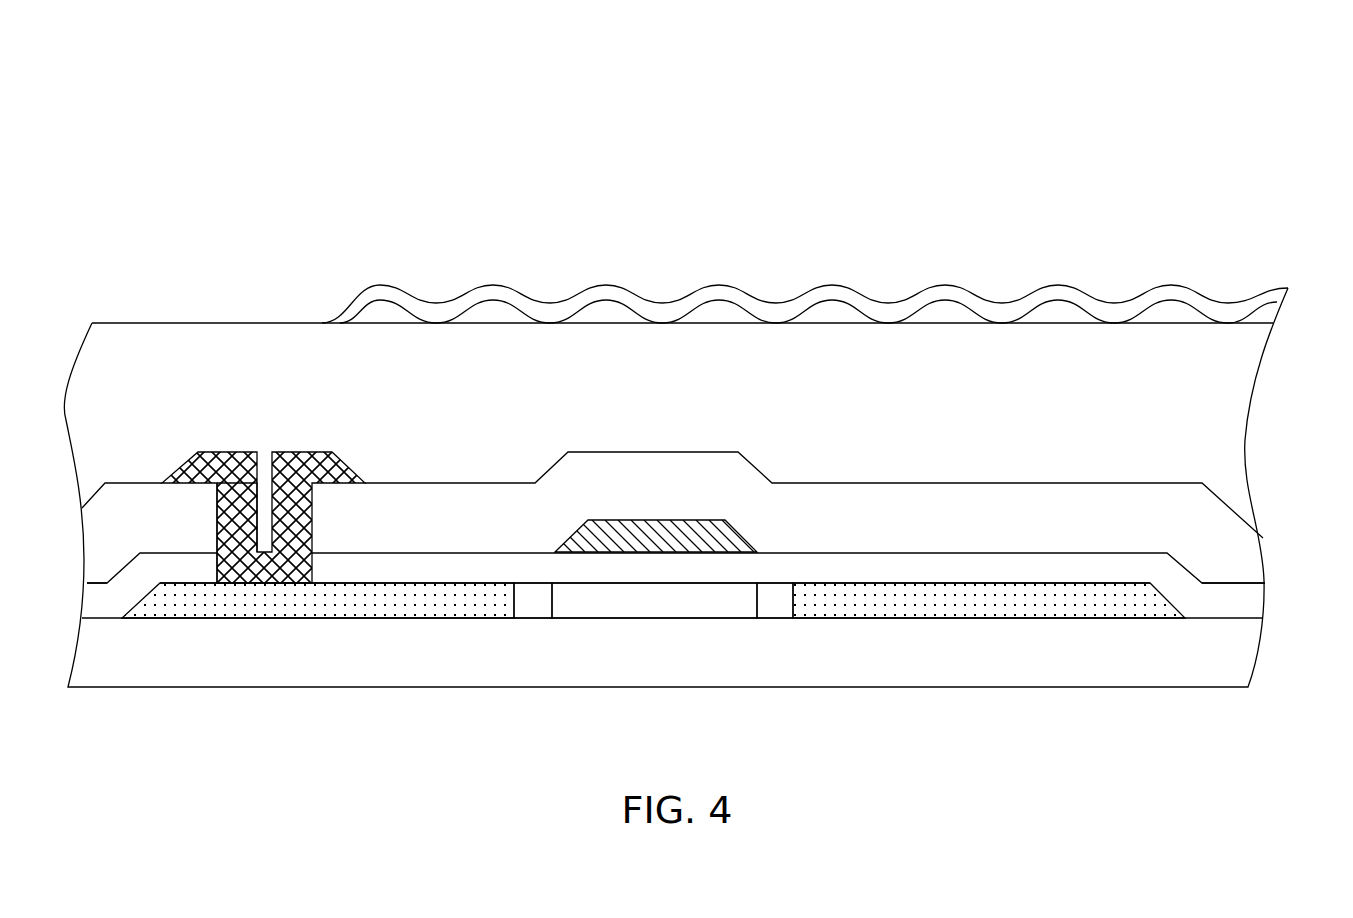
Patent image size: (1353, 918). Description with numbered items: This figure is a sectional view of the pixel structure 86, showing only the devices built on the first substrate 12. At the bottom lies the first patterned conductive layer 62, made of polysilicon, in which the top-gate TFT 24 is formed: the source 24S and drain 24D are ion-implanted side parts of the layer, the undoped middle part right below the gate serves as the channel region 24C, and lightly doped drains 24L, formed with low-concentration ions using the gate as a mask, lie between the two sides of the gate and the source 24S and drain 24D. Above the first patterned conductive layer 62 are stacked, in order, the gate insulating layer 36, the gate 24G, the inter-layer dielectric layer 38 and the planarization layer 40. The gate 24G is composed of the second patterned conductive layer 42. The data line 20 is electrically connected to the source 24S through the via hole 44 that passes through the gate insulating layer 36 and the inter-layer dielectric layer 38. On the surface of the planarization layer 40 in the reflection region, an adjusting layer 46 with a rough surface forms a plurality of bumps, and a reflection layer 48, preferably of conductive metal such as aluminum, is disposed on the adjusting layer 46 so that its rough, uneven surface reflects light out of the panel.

The pixel structure 86 is at (1152, 133).
The first substrate 12 is at (1243, 650).
The gate insulating layer 36 is at (1250, 603).
The first patterned conductive layer 62 is at (133, 600).
The TFT 24 is at (576, 426).
The source 24S is at (372, 603).
The lightly doped drains 24L is at (537, 603).
The channel region 24C is at (652, 603).
The drain 24D is at (1007, 603).
The gate 24G is at (700, 520).
The inter-layer dielectric layer 38 is at (1253, 560).
The second patterned conductive layer 42 is at (637, 520).
The planarization layer 40 is at (1233, 437).
The data line 20 is at (230, 452).
The via hole 44 is at (217, 520).
The adjusting layer 46 is at (1188, 312).
The reflection layer 48 is at (1275, 302).